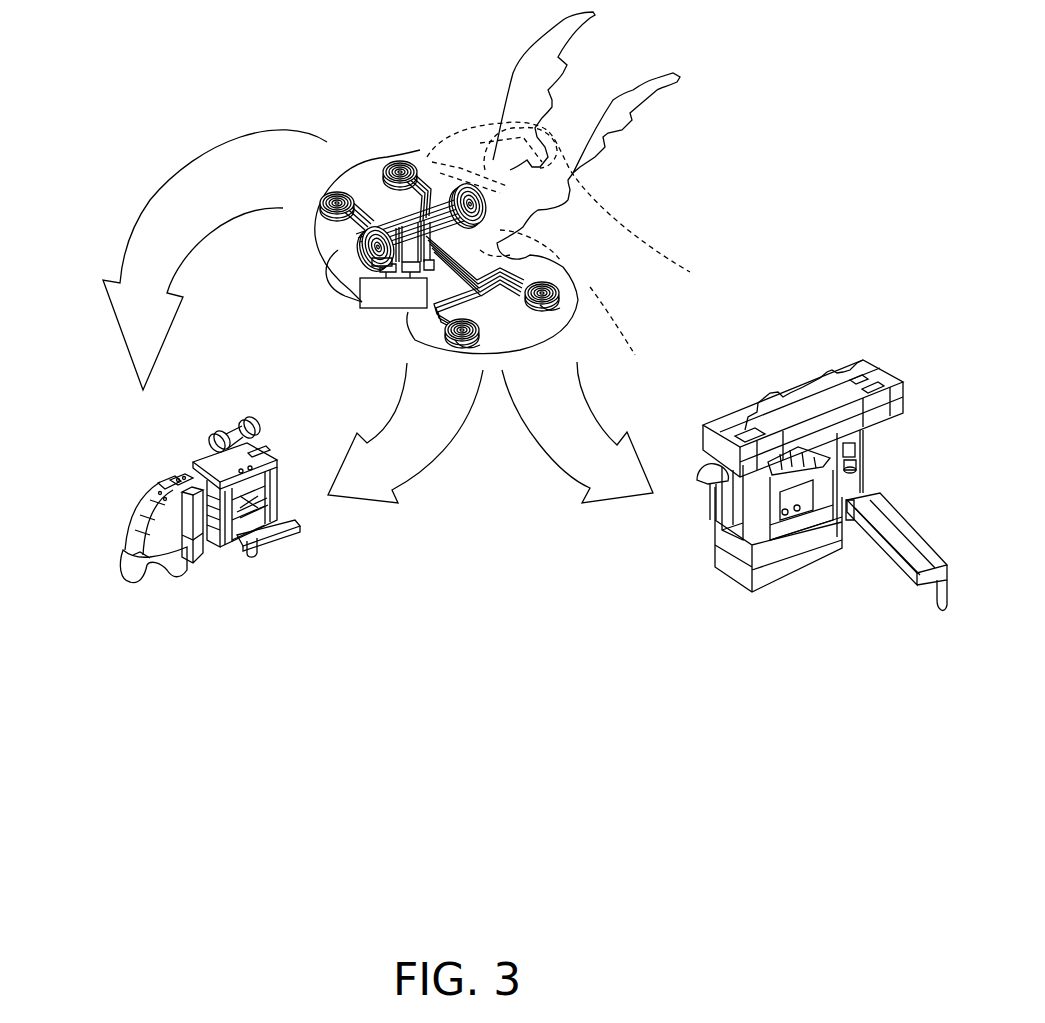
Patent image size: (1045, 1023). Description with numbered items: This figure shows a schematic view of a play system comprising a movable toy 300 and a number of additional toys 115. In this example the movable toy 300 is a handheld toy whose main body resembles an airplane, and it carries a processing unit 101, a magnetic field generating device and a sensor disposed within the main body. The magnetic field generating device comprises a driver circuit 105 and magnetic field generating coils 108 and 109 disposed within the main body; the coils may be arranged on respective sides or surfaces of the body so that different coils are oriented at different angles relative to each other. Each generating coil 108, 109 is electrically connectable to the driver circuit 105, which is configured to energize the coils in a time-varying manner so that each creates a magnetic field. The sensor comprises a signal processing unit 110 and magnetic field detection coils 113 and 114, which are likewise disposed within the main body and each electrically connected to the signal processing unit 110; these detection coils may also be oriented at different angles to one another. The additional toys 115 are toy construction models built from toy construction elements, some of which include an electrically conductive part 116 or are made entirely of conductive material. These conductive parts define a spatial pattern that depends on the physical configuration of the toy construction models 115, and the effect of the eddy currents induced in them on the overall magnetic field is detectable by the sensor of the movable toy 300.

The movable toy 300 is at (310, 207).
The magnetic field generating coil 108 is at (605, 401).
The signal processing unit 110 is at (507, 236).
The magnetic field detection coil 114 is at (357, 242).
The magnetic field generating coil 109 is at (380, 257).
The driver circuit 105 is at (360, 300).
The processing unit 101 is at (402, 305).
The magnetic field detection coil 113 is at (455, 350).
The additional toy 115 is at (180, 477).
The electrically conductive part 116 is at (133, 553).